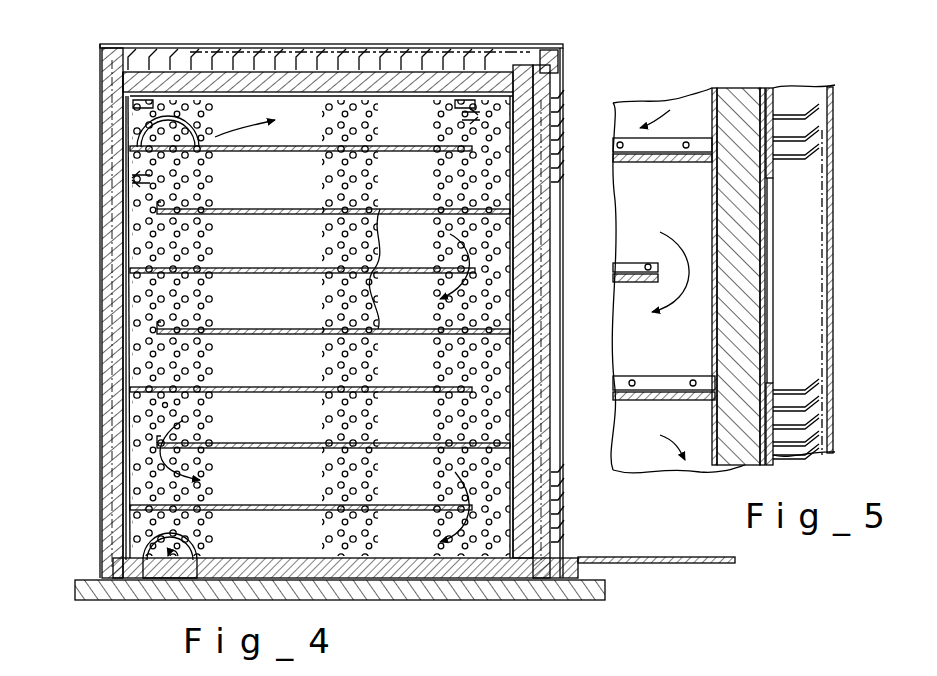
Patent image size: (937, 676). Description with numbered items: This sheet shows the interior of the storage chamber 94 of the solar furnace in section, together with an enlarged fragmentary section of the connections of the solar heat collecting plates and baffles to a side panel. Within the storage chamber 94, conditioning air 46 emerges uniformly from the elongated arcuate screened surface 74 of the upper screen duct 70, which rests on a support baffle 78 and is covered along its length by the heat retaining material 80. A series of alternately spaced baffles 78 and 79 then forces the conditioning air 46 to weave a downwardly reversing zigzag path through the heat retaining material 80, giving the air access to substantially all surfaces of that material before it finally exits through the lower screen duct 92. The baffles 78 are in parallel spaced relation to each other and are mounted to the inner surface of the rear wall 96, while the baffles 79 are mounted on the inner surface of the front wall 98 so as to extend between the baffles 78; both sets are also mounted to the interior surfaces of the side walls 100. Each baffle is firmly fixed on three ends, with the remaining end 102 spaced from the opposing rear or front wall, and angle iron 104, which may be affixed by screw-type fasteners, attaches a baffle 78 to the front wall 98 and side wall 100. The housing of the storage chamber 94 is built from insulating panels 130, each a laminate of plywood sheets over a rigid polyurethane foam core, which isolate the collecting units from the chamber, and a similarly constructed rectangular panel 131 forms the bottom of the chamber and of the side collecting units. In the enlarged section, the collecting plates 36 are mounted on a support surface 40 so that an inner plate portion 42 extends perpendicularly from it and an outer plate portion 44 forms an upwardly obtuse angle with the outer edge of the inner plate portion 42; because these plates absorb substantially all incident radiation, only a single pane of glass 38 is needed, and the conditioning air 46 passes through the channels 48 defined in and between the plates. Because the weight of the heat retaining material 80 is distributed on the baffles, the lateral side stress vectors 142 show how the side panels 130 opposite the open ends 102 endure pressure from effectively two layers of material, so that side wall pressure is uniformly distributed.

In FIG. 4, the collecting plates 36 is at (530, 58).
In FIG. 5, the collecting plates 36 is at (812, 103).
In FIG. 5, the single pane of glass 38 is at (835, 270).
In FIG. 5, the support surface 40 is at (775, 302).
In FIG. 5, the inner plate portion 42 is at (785, 165).
In FIG. 5, the outer plate portion 44 is at (817, 150).
In FIG. 4, the conditioning air 46 is at (238, 140).
In FIG. 5, the channels 48 is at (815, 140).
In FIG. 4, the upper screen duct 70 is at (160, 140).
In FIG. 4, the screen 74 is at (173, 136).
In FIG. 4, the baffles 78 is at (218, 152).
In FIG. 5, the baffles 78 is at (622, 170).
In FIG. 4, the baffles 79 is at (391, 269).
In FIG. 4, the heat retaining material 80 is at (168, 405).
In FIG. 4, the lower screen duct 92 is at (148, 562).
In FIG. 4, the storage chamber 94 is at (387, 125).
In FIG. 4, the rear wall 96 is at (123, 243).
In FIG. 4, the front wall 98 is at (503, 165).
In FIG. 5, the front wall 98 is at (717, 107).
In FIG. 5, the side walls 100 is at (648, 107).
In FIG. 4, the remaining end 102 is at (160, 325).
In FIG. 5, the remaining end 102 is at (662, 268).
In FIG. 4, the angle iron 104 is at (135, 380).
In FIG. 5, the angle iron 104 is at (712, 146).
In FIG. 4, the insulating panels 130 is at (281, 82).
In FIG. 5, the insulating panels 130 is at (745, 458).
In FIG. 4, the rectangular panel 131 is at (455, 570).
In FIG. 4, the lateral side stress vectors 142 is at (130, 178).